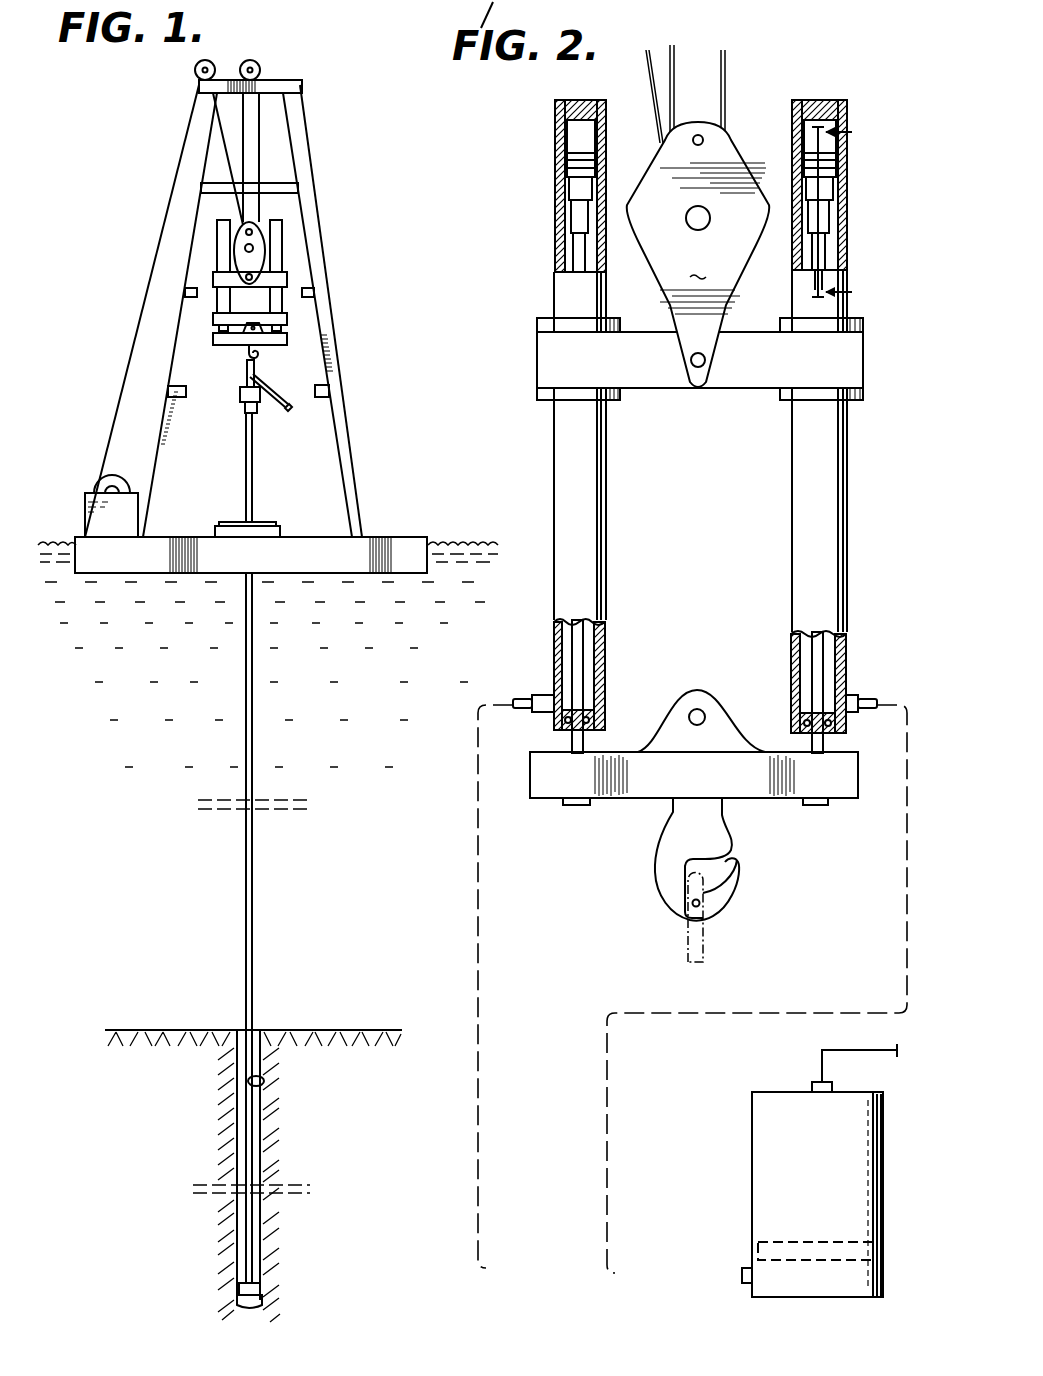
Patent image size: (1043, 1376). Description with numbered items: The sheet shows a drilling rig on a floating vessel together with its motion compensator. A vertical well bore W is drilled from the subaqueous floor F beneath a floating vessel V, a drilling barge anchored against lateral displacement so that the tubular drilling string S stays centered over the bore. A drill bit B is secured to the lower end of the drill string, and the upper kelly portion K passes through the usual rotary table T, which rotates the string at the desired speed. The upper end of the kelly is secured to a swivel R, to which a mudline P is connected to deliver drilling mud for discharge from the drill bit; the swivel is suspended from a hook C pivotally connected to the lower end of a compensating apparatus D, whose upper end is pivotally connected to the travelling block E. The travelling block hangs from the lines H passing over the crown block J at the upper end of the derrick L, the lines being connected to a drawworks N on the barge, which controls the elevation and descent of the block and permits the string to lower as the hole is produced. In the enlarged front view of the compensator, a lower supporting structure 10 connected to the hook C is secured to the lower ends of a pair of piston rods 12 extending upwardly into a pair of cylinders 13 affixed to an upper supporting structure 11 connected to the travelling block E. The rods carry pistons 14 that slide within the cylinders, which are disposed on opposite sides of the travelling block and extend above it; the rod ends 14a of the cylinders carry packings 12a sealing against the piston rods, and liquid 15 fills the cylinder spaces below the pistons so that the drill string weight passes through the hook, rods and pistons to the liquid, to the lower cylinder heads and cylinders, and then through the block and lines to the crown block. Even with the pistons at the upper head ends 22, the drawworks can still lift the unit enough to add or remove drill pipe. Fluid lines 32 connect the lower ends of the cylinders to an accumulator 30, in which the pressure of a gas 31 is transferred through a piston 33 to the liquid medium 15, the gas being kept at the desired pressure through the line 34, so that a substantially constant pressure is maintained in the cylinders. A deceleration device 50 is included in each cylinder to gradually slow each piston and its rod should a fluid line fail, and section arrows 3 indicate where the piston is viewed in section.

In FIG. 1, the crown block J is at (259, 68).
In FIG. 1, the lines H is at (262, 157).
In FIG. 1, the travelling block E is at (263, 243).
In FIG. 2, the travelling block E is at (698, 254).
In FIG. 1, the compensating apparatus D is at (300, 258).
In FIG. 1, the hook C is at (260, 358).
In FIG. 2, the hook C is at (662, 880).
In FIG. 1, the derrick L is at (332, 347).
In FIG. 1, the swivel R is at (240, 397).
In FIG. 1, the mudline P is at (287, 410).
In FIG. 1, the kelly portion K is at (254, 470).
In FIG. 1, the rotary table T is at (215, 530).
In FIG. 1, the drawworks N is at (87, 515).
In FIG. 1, the floating vessel V is at (396, 543).
In FIG. 1, the drilling string S is at (253, 845).
In FIG. 1, the subaqueous floor F is at (330, 1030).
In FIG. 1, the well bore W is at (264, 1081).
In FIG. 1, the drill bit B is at (270, 1292).
In FIG. 2, the upper head ends 22 is at (587, 100).
In FIG. 2, the pistons 14 is at (570, 168).
In FIG. 2, the deceleration device 50 is at (552, 195).
In FIG. 2, the section line 3- 3 is at (854, 210).
In FIG. 2, the upper supporting structure 11 is at (650, 378).
In FIG. 2, the cylinders 13 is at (590, 522).
In FIG. 2, the piston rods 12 is at (575, 655).
In FIG. 2, the rod ends 14a is at (603, 720).
In FIG. 2, the packings 12a is at (790, 723).
In FIG. 2, the liquid 15 is at (568, 248).
In FIG. 2, the lower supporting structure 10 is at (652, 772).
In FIG. 2, the fluid lines 32 is at (605, 1188).
In FIG. 2, the accumulator 30 is at (738, 1108).
In FIG. 2, the gas 31 is at (788, 1148).
In FIG. 2, the piston 33 is at (790, 1242).
In FIG. 2, the line 34 is at (823, 1050).